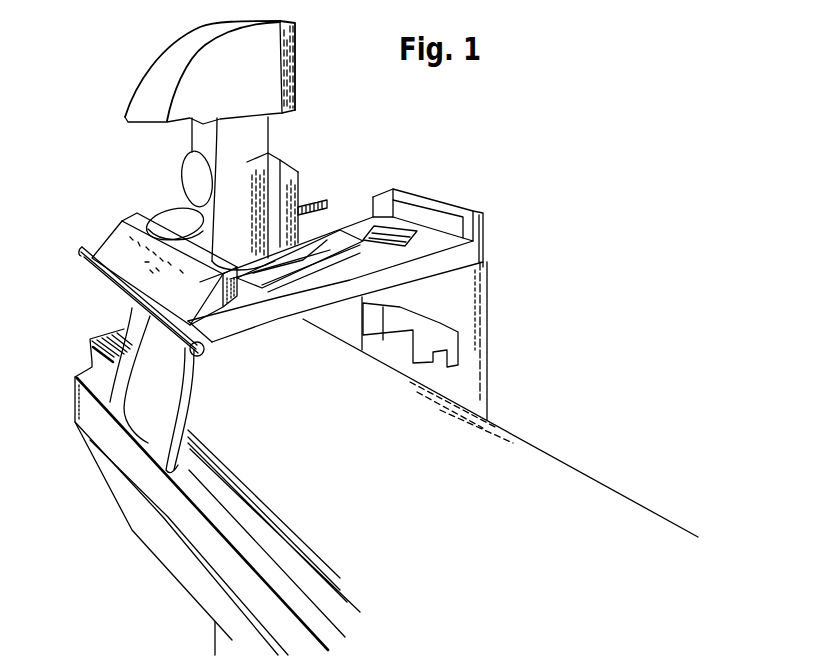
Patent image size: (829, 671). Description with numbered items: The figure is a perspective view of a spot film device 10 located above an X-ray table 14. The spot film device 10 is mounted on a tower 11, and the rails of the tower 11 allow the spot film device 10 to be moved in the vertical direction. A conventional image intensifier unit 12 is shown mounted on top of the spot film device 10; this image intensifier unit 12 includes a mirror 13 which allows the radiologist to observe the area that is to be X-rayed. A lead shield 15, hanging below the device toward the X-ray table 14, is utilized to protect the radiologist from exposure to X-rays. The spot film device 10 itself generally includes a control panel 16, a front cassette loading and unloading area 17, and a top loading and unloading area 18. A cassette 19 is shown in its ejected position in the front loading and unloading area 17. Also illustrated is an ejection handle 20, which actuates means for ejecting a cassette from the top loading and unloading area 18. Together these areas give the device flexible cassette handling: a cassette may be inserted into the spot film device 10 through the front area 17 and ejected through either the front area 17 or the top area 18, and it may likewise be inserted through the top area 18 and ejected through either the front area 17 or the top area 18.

The spot film device 10 is at (330, 183).
The tower 11 is at (479, 377).
The image intensifier unit 12 is at (262, 142).
The mirror 13 is at (167, 209).
The X-ray table 14 is at (357, 449).
The lead shield 15 is at (176, 408).
The control panel 16 is at (108, 238).
The front cassette loading and unloading area 17 is at (100, 283).
The top loading and unloading area 18 is at (360, 255).
The cassette 19 is at (128, 312).
The ejection handle 20 is at (397, 231).